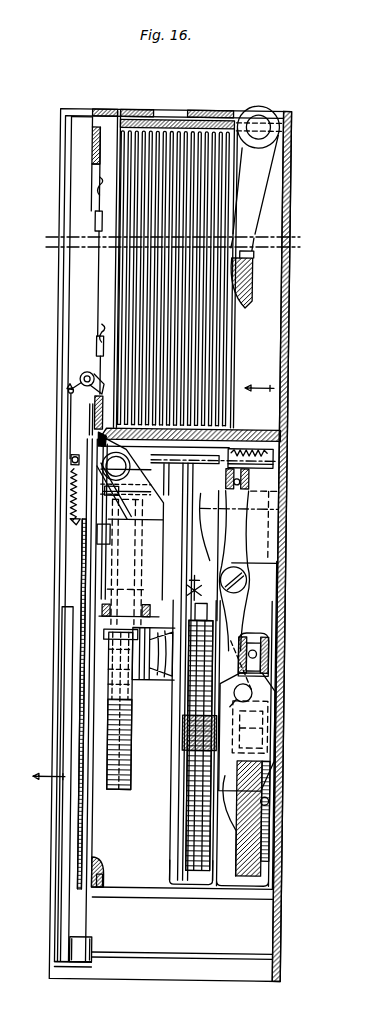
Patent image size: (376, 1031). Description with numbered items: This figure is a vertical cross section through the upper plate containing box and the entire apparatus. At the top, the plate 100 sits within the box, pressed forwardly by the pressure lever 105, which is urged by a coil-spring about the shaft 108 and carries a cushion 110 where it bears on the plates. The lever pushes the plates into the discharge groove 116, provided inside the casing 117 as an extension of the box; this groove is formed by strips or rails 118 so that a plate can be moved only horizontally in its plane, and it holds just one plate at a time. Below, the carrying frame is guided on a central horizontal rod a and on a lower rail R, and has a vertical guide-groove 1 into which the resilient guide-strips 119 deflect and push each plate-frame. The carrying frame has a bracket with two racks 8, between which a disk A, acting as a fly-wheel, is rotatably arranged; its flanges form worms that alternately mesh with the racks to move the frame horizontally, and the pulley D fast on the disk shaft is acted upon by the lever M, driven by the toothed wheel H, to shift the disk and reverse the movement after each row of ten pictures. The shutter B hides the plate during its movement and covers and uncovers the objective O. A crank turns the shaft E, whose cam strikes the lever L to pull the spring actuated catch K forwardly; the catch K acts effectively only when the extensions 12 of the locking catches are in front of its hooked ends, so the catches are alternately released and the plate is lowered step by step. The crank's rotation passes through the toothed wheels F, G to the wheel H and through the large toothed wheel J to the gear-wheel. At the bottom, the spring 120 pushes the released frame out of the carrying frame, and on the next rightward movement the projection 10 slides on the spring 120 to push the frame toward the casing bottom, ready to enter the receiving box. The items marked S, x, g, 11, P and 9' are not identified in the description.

The plate 100 is at (85, 647).
The shaft 108 is at (265, 134).
The pressure lever 105 is at (251, 228).
The cushion 110 is at (246, 290).
The strips or rails 118 is at (90, 130).
The spring S is at (93, 259).
The resilient guide-strips 119 is at (95, 221).
The casing 117 is at (68, 384).
The pin x is at (67, 395).
The discharge groove 116 is at (102, 423).
The latch 11 is at (103, 442).
The pivot g is at (87, 467).
The central horizontal rod a is at (97, 470).
The vertical guide-groove 1 is at (72, 505).
The disk A is at (112, 565).
The shaft P is at (141, 589).
The racks 8 is at (129, 608).
The extensions 12 is at (214, 476).
The shutter B is at (190, 497).
The spring actuated catch K is at (272, 465).
The lever L is at (240, 620).
The objective O is at (258, 536).
The large toothed wheel J is at (196, 587).
The pulley D is at (268, 645).
The lever M is at (264, 686).
The shaft E is at (241, 695).
The toothed wheel F is at (275, 706).
The toothed wheel G is at (277, 718).
The toothed wheel H is at (258, 858).
The stop 9' is at (106, 869).
The lower rail R is at (108, 884).
The spring 120 is at (93, 947).
The projection 10 is at (87, 963).